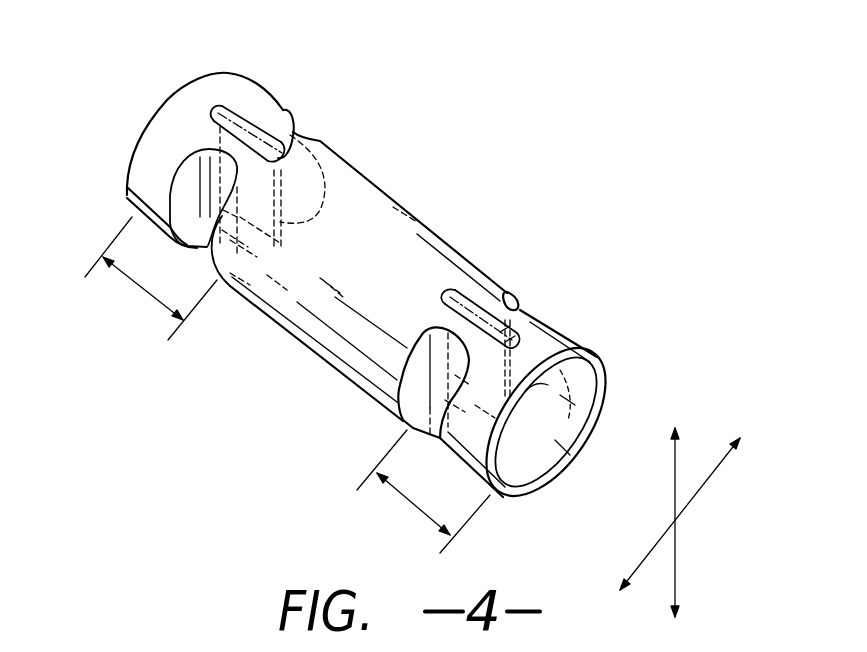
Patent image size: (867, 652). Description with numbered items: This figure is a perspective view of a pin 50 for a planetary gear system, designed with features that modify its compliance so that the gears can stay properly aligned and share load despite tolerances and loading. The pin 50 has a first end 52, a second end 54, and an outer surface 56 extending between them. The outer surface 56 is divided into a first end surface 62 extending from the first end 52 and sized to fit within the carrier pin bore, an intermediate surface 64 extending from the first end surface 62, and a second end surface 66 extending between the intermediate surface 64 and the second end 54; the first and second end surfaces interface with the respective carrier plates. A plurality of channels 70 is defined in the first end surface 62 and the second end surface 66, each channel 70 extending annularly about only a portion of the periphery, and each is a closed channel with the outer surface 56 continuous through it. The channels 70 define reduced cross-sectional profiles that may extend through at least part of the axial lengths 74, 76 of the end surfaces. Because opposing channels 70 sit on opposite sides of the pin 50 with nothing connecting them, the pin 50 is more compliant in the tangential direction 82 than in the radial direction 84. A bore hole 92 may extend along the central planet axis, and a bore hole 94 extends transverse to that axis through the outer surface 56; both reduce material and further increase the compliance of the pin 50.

The pin 50 is at (552, 145).
The first end 52 is at (602, 377).
The second end 54 is at (176, 99).
The outer surface 56 is at (338, 315).
The first end surface 62 is at (525, 273).
The intermediate surface 64 is at (338, 122).
The second end surface 66 is at (253, 62).
The channels 70 is at (418, 437).
The axial length 74 is at (413, 503).
The axial length 76 is at (143, 293).
The tangential direction 82 is at (700, 493).
The radial direction 84 is at (678, 557).
The bore hole 92 is at (512, 442).
The bore hole 94 is at (480, 318).